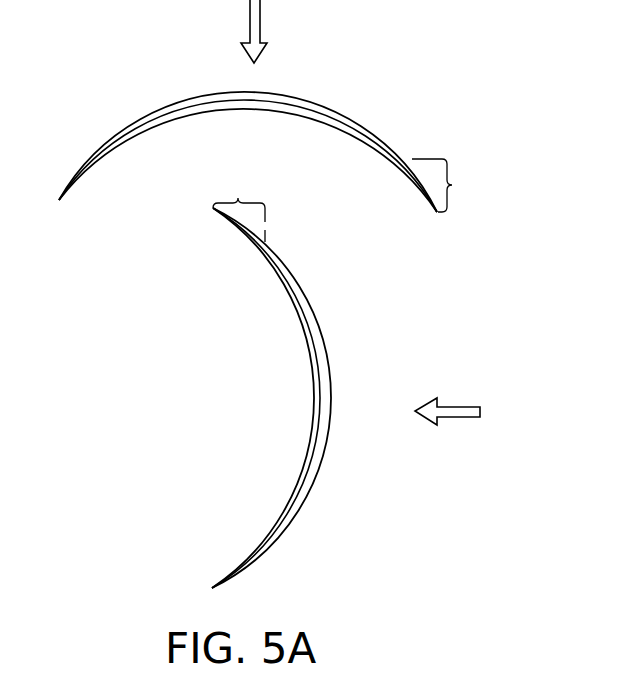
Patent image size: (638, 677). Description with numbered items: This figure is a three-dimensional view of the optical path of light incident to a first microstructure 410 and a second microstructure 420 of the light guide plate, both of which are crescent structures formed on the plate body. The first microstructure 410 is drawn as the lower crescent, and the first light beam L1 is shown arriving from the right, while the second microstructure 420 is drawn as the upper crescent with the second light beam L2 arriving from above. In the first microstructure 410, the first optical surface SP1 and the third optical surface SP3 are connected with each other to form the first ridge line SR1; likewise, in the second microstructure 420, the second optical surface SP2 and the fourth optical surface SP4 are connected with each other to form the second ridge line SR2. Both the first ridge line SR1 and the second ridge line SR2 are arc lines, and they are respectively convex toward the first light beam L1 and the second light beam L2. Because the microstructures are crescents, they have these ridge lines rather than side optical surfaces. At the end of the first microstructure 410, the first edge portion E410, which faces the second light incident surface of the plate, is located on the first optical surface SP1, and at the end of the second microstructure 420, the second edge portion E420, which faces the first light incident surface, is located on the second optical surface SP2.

The first light beam L1 is at (458, 407).
The second light beam L2 is at (260, 17).
The first microstructure 410 is at (301, 379).
The second microstructure 420 is at (285, 130).
The first ridge line SR1 is at (322, 357).
The second ridge line SR2 is at (360, 128).
The first optical surface SP1 is at (329, 378).
The second optical surface SP2 is at (300, 98).
The third optical surface SP3 is at (308, 393).
The fourth optical surface SP4 is at (295, 118).
The first edge portion E410 is at (228, 206).
The second edge portion E420 is at (461, 185).